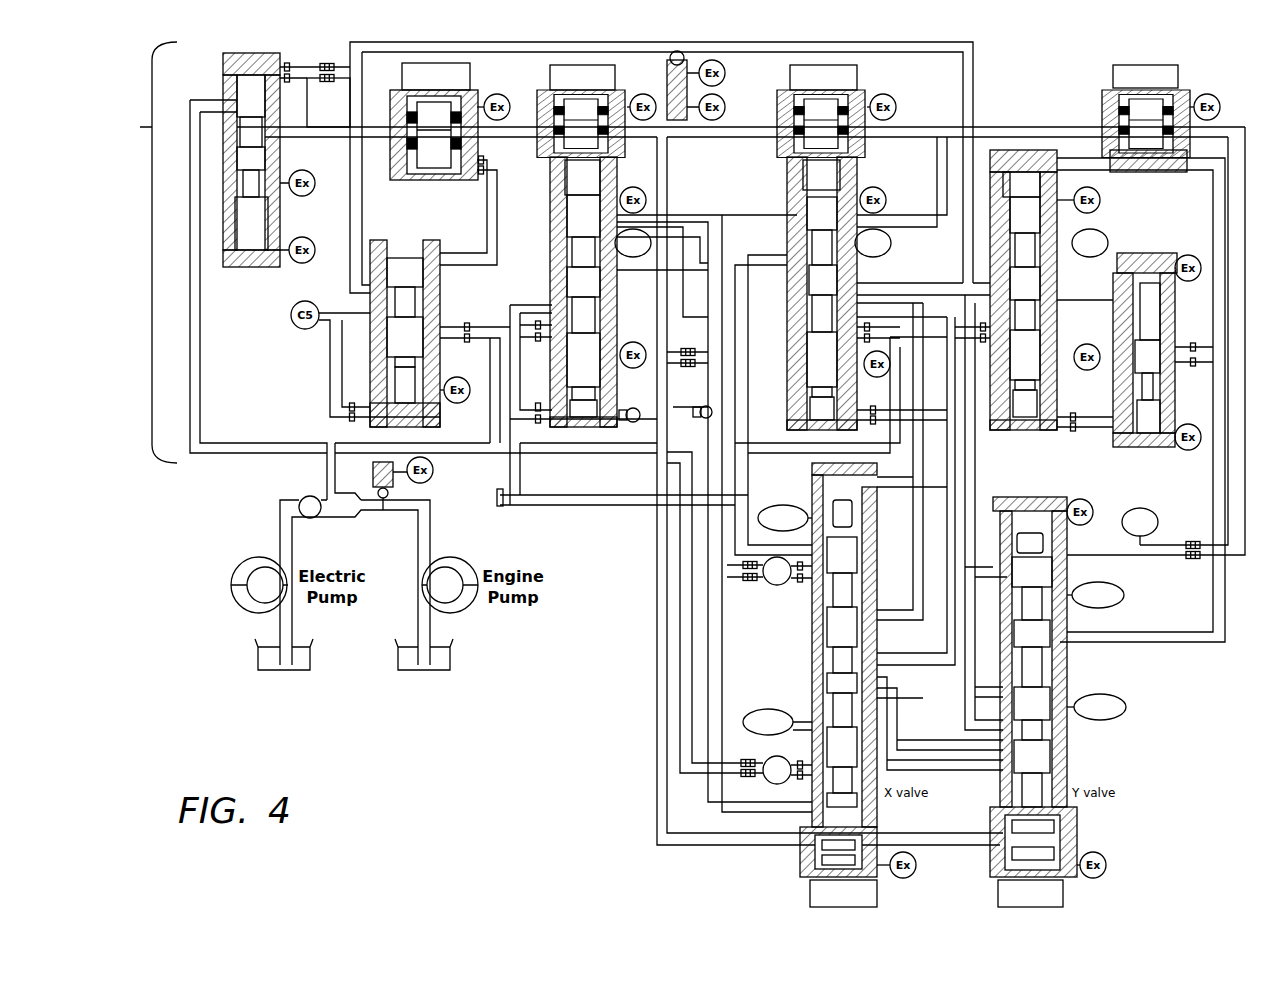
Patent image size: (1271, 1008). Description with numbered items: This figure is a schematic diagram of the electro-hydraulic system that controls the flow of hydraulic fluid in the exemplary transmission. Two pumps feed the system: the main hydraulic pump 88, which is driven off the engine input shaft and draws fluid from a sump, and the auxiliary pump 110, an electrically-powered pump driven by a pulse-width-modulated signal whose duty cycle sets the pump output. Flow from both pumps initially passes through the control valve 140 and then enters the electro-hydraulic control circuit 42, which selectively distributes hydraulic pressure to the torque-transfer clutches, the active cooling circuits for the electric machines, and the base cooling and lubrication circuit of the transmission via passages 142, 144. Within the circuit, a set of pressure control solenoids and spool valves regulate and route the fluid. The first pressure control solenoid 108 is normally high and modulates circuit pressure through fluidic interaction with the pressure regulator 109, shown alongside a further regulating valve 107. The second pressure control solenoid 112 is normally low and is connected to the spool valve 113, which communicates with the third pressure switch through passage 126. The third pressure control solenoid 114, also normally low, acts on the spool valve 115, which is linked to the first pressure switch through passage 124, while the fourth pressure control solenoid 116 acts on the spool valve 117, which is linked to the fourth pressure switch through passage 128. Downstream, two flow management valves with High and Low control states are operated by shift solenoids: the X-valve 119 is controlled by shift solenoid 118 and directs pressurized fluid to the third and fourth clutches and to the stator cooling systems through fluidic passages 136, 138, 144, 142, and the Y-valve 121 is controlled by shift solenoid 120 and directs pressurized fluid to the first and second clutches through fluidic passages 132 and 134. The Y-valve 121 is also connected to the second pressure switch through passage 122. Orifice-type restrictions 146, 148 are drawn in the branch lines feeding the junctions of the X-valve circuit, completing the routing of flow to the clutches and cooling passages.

The electro-hydraulic control circuit 42 is at (150, 126).
The main hydraulic pump 88 is at (455, 610).
The pressure regulator valve 107 is at (248, 245).
The pressure control solenoid PCS1 108 is at (410, 63).
The pressure regulator 109 is at (418, 270).
The auxiliary pump 110 is at (255, 610).
The pressure control solenoid PCS2 112 is at (1120, 65).
The spool valve 113 is at (1030, 282).
The pressure control solenoid PCS3 114 is at (795, 65).
The spool valve 115 is at (807, 183).
The pressure control solenoid PCS4 116 is at (560, 65).
The spool valve 117 is at (585, 215).
The X-valve shift solenoid 118 is at (828, 897).
The X-valve 119 is at (838, 650).
The Y-valve shift solenoid 120 is at (1012, 897).
The Y-valve 121 is at (1048, 760).
The passage to pressure switch PS2 122 is at (1150, 510).
The passage to pressure switch PS1 124 is at (890, 243).
The passage to pressure switch PS3 126 is at (1100, 233).
The passage to pressure switch PS4 128 is at (650, 232).
The fluidic passage to clutch C1 132 is at (1127, 709).
The fluidic passage to clutch C2 134 is at (1125, 597).
The fluidic passage to clutch C3 136 is at (762, 709).
The fluidic passage to clutch C4 138 is at (778, 505).
The control valve 140 is at (305, 498).
The cooling passage 142 is at (777, 785).
The cooling passage 144 is at (777, 585).
The orifice 146 is at (745, 585).
The orifice 148 is at (740, 773).